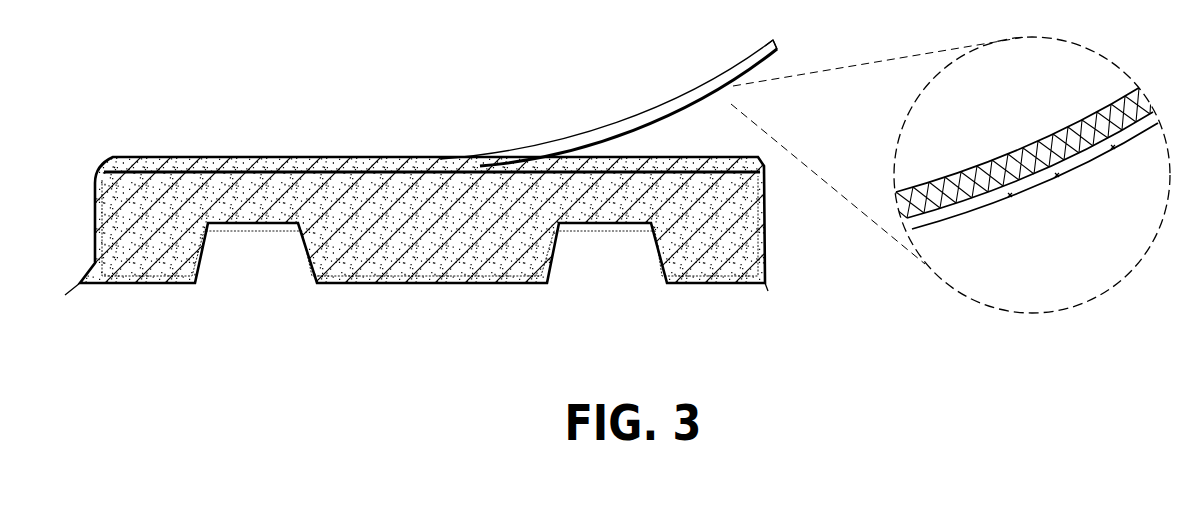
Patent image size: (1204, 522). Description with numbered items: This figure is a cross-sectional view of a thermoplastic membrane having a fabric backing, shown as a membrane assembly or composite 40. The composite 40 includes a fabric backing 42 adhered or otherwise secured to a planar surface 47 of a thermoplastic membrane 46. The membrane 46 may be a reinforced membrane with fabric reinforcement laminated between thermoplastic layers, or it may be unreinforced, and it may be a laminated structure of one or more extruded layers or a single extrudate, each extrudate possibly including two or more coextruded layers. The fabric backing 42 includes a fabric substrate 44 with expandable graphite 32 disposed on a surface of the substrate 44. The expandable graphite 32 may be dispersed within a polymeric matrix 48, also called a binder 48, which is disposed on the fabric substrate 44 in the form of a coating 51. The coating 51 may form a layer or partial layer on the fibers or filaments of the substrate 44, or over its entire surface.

The expandable graphite 32 is at (1038, 130).
The composite 40 is at (613, 112).
The fabric backing 42 is at (658, 125).
The fabric substrate 44 is at (934, 185).
The membrane 46 is at (355, 158).
The planar surface 47 is at (777, 47).
The polymeric matrix 48 is at (1060, 132).
The coating 51 is at (1013, 132).